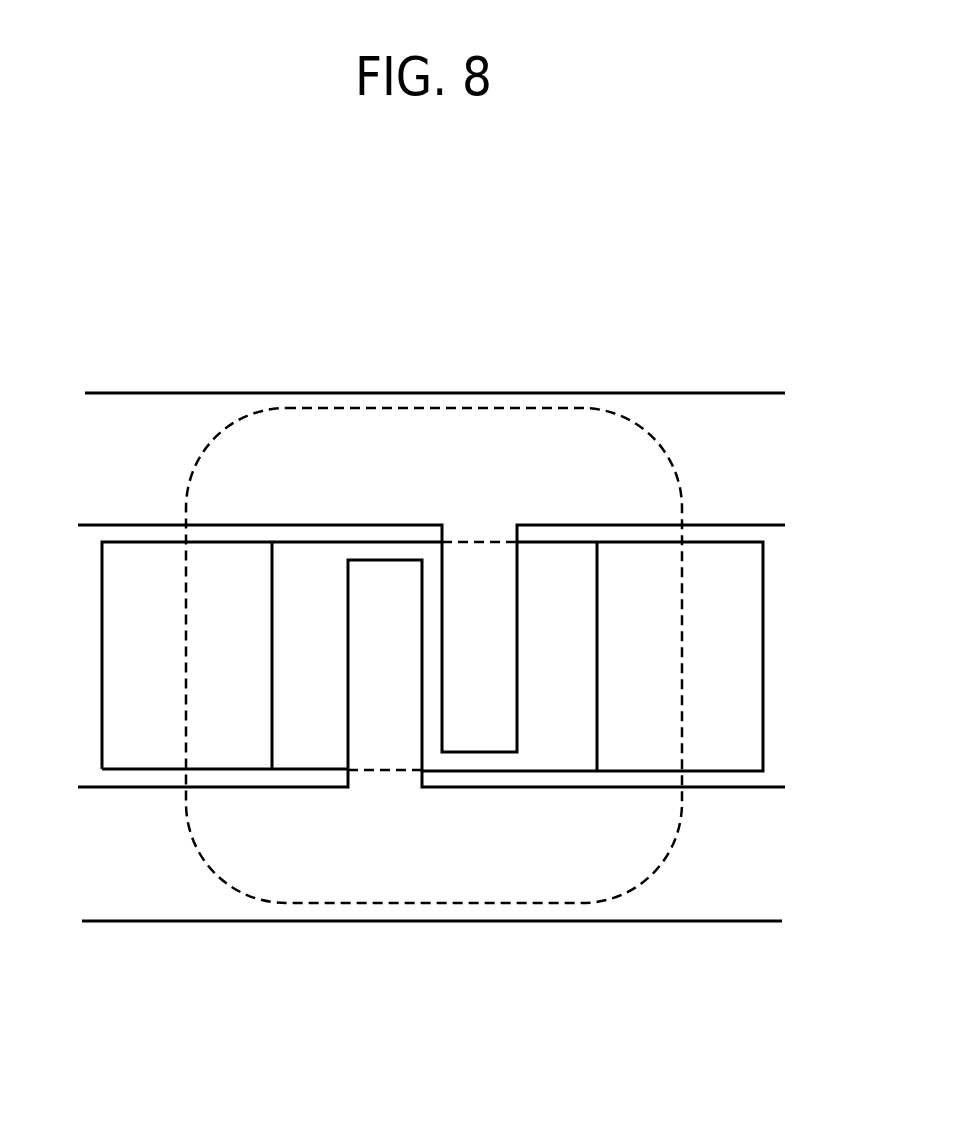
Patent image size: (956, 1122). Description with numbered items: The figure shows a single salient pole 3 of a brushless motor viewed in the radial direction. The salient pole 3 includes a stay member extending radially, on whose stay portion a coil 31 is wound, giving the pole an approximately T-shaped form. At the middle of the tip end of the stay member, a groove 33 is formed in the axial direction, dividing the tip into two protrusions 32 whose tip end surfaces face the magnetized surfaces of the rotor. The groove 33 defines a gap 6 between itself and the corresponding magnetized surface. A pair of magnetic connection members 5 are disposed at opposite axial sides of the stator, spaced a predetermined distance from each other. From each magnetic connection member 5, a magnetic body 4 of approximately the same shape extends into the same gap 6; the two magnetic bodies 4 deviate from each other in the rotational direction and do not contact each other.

The salient pole 3 is at (433, 325).
The magnetic connection member 5 is at (220, 393).
The coil 31 is at (513, 407).
The protrusion 32 is at (141, 542).
The groove 33 is at (557, 542).
The magnetic body 4 is at (348, 617).
The gap 6 is at (311, 753).